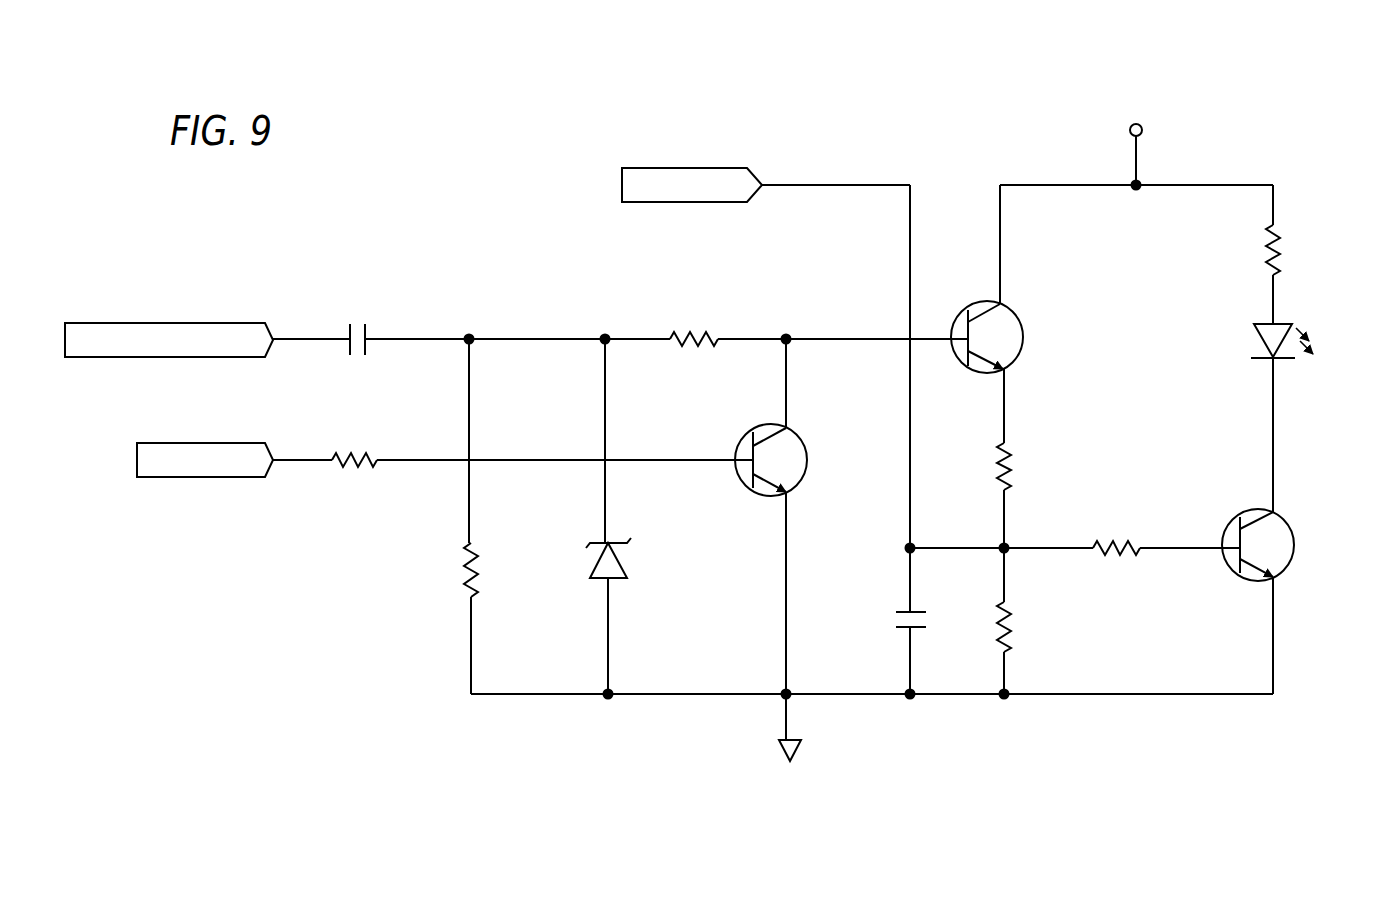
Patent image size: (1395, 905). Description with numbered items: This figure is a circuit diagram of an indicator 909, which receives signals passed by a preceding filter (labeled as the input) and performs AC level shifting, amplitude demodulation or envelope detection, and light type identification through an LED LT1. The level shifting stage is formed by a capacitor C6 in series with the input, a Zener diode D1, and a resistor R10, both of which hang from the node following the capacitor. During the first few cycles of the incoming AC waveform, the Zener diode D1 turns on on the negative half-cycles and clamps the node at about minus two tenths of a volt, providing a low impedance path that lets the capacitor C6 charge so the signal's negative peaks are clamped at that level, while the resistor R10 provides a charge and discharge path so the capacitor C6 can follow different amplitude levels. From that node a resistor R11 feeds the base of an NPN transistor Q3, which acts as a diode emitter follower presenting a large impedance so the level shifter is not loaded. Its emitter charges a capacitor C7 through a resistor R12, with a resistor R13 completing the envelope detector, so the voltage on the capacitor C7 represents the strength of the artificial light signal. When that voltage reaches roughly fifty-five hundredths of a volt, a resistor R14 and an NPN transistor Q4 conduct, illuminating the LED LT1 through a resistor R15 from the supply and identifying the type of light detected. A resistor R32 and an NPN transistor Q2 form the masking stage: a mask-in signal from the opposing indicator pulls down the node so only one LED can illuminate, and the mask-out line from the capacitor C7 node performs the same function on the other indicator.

The indicator 909 is at (1312, 90).
The capacitor C6 is at (361, 322).
The resistor R32 is at (362, 448).
The resistor R11 is at (707, 330).
The resistor R10 is at (460, 567).
The Zener diode D1 is at (625, 568).
The NPN transistor Q2 is at (806, 452).
The capacitor C7 is at (896, 619).
The NPN transistor Q3 is at (1022, 327).
The resistor R12 is at (1016, 470).
The resistor R13 is at (1016, 630).
The resistor R14 is at (1120, 538).
The NPN transistor Q4 is at (1292, 533).
The resistor R15 is at (1283, 250).
The LED LT1 is at (1303, 341).